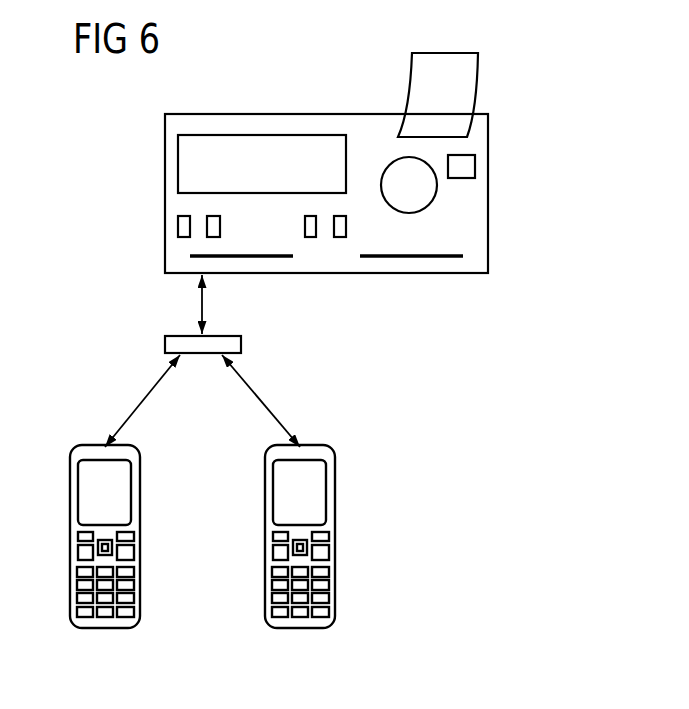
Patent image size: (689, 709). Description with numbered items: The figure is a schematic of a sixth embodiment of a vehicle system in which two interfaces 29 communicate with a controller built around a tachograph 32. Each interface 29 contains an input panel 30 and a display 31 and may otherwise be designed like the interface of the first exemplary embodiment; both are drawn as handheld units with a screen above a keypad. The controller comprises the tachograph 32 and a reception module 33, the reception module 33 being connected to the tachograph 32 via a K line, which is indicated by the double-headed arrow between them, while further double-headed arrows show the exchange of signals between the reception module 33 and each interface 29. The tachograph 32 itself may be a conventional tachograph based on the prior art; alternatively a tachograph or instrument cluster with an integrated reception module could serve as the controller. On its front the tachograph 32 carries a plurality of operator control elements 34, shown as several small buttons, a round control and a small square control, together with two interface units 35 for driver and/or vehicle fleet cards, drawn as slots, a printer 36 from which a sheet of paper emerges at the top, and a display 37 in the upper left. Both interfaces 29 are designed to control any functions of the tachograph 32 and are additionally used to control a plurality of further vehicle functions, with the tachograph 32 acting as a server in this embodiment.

The interface 29 is at (140, 535).
The input panel 30 is at (325, 582).
The display 31 is at (318, 493).
The tachograph 32 is at (291, 114).
The reception module 33 is at (203, 355).
The operator control elements 34 is at (178, 226).
The interface units 35 is at (242, 258).
The printer 36 is at (410, 82).
The display 37 is at (178, 158).